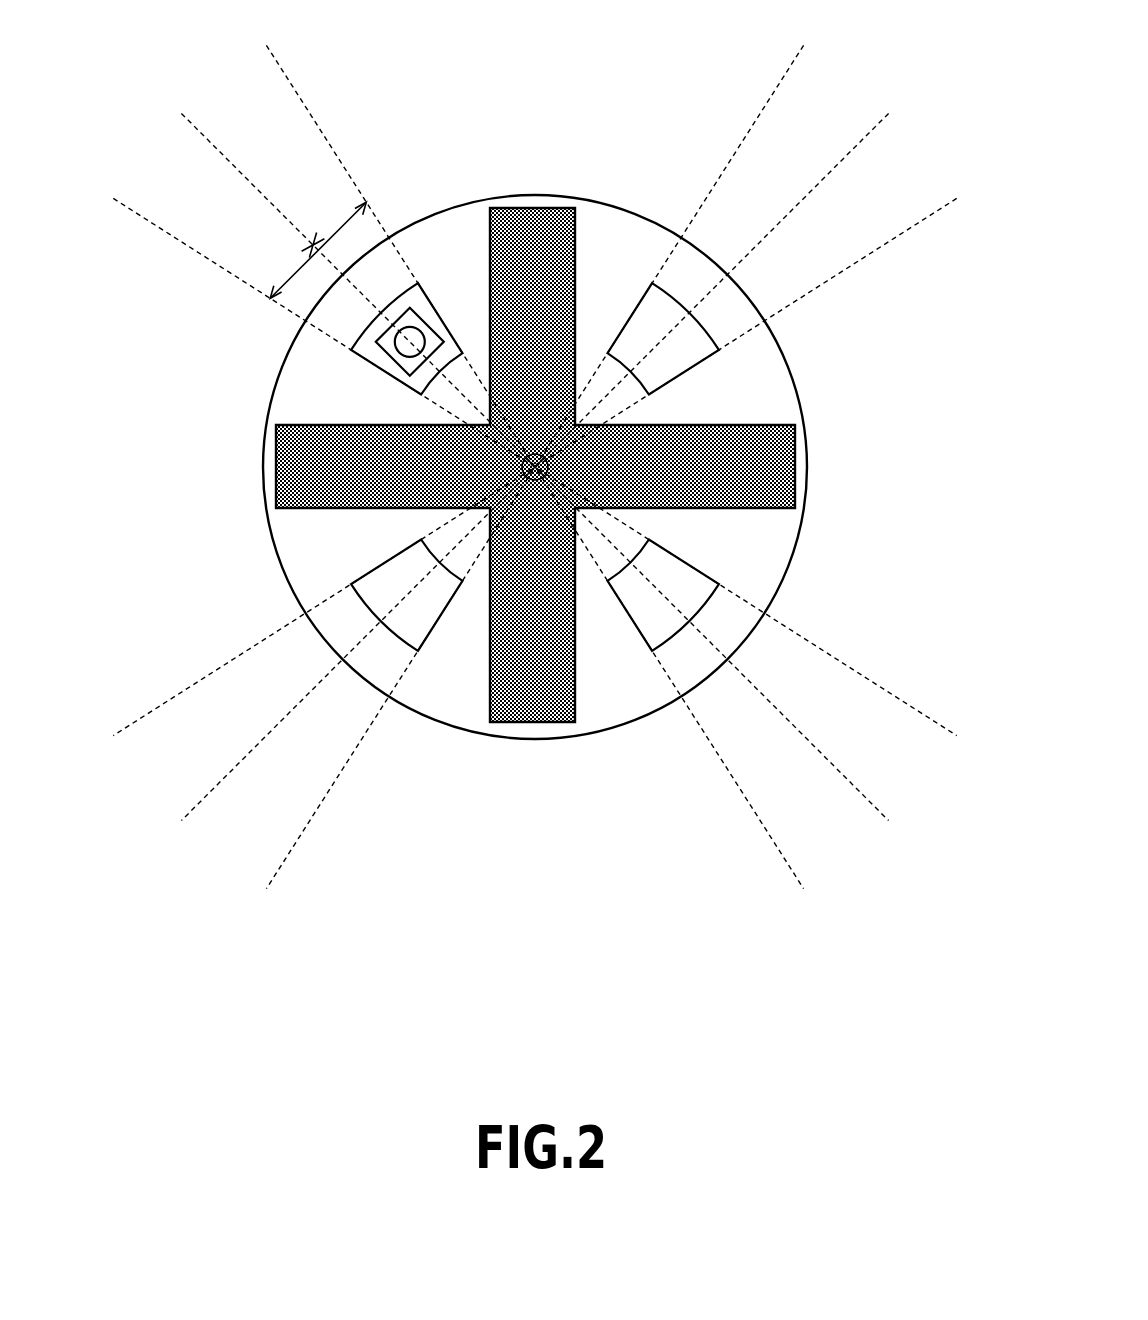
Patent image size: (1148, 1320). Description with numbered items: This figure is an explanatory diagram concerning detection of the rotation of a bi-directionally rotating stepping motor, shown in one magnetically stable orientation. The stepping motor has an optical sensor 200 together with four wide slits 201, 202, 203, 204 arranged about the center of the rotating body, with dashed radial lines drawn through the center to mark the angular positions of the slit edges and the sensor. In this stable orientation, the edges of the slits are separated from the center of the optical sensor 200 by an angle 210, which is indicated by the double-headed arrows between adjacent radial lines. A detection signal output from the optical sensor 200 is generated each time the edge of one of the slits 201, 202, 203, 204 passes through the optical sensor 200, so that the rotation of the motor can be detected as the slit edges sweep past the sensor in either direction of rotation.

The optical sensor 200 is at (357, 352).
The wide slit 201 is at (432, 307).
The wide slit 202 is at (677, 298).
The wide slit 203 is at (692, 565).
The wide slit 204 is at (378, 565).
The angle 210 is at (337, 224).